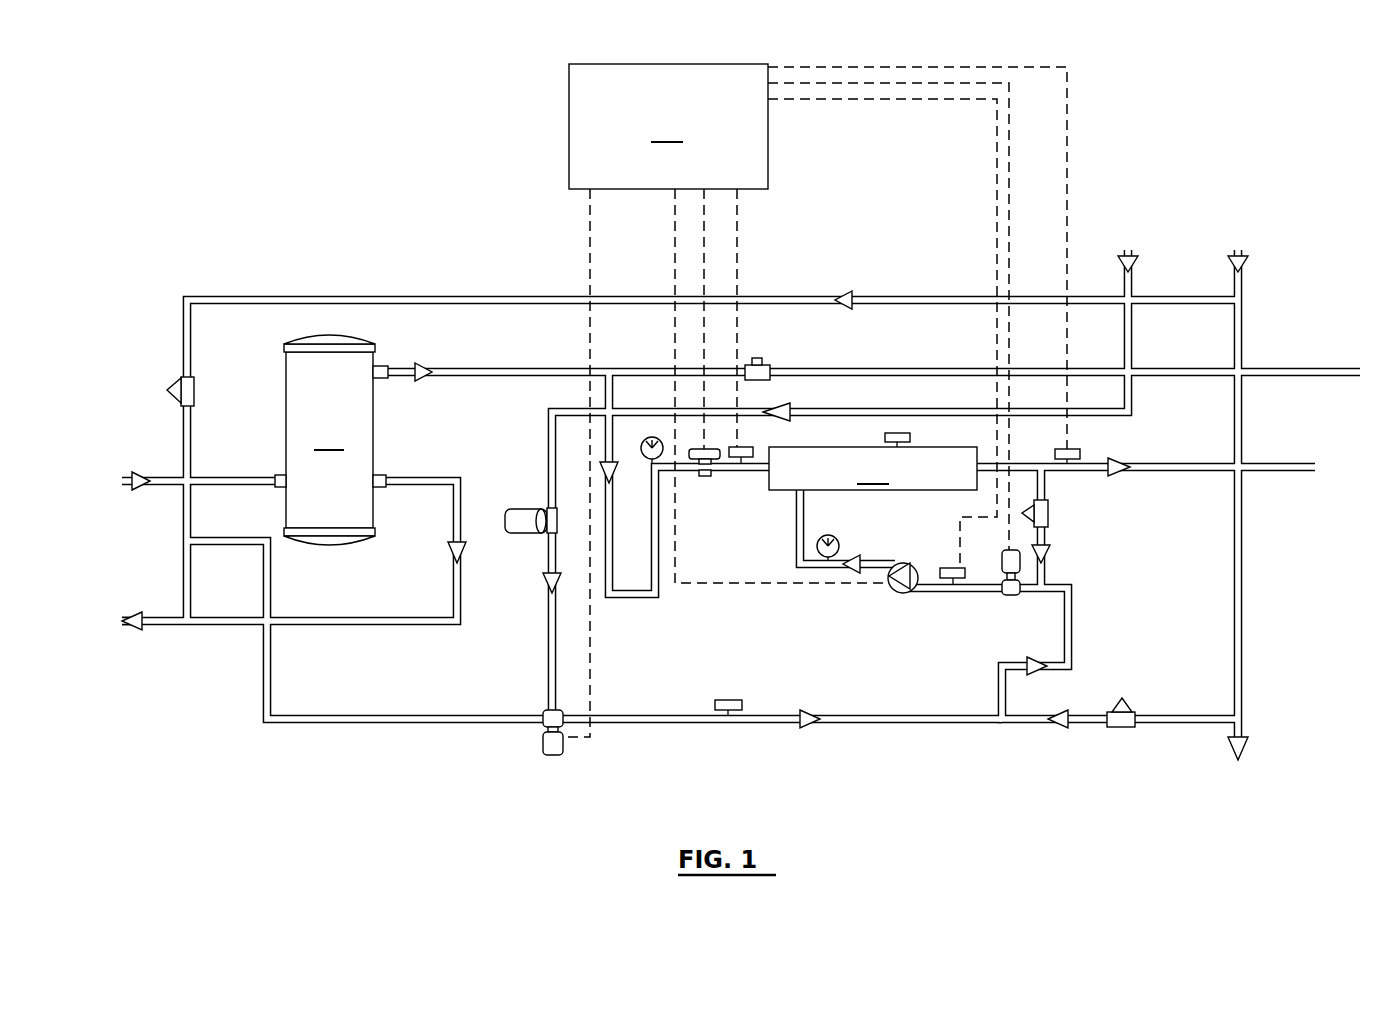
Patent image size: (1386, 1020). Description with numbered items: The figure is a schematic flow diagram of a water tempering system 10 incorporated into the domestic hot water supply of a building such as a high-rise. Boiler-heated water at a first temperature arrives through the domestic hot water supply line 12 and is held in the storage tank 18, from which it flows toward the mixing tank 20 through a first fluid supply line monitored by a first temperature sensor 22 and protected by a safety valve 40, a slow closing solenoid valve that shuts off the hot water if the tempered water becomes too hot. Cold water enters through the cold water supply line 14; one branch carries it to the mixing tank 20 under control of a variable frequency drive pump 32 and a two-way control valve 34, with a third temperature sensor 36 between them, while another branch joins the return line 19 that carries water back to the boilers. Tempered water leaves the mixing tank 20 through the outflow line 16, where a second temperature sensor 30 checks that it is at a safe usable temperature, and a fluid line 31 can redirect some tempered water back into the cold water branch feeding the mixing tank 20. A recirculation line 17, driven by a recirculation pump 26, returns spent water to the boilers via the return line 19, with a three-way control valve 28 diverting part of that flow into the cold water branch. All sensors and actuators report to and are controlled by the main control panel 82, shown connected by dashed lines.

The water tempering system 10 is at (808, 182).
The domestic hot water supply line 12 is at (128, 478).
The domestic cold water supply line 14 is at (1240, 255).
The tempered water outflow line 16 is at (1130, 471).
The recirculation line 17 is at (1130, 255).
The storage tank 18 is at (331, 440).
The return line 19 is at (143, 629).
The mixing tank 20 is at (873, 461).
The first temperature sensor 22 is at (748, 452).
The recirculation pump 26 is at (520, 535).
The three-way control valve 28 is at (563, 745).
The second temperature sensor 30 is at (1080, 455).
The fluid line 31 is at (1048, 545).
The variable frequency drive pump 32 is at (893, 584).
The two-way control valve 34 is at (1000, 560).
The third temperature sensor 36 is at (955, 566).
The safety valve 40 is at (705, 476).
The main control panel 82 is at (815, 400).